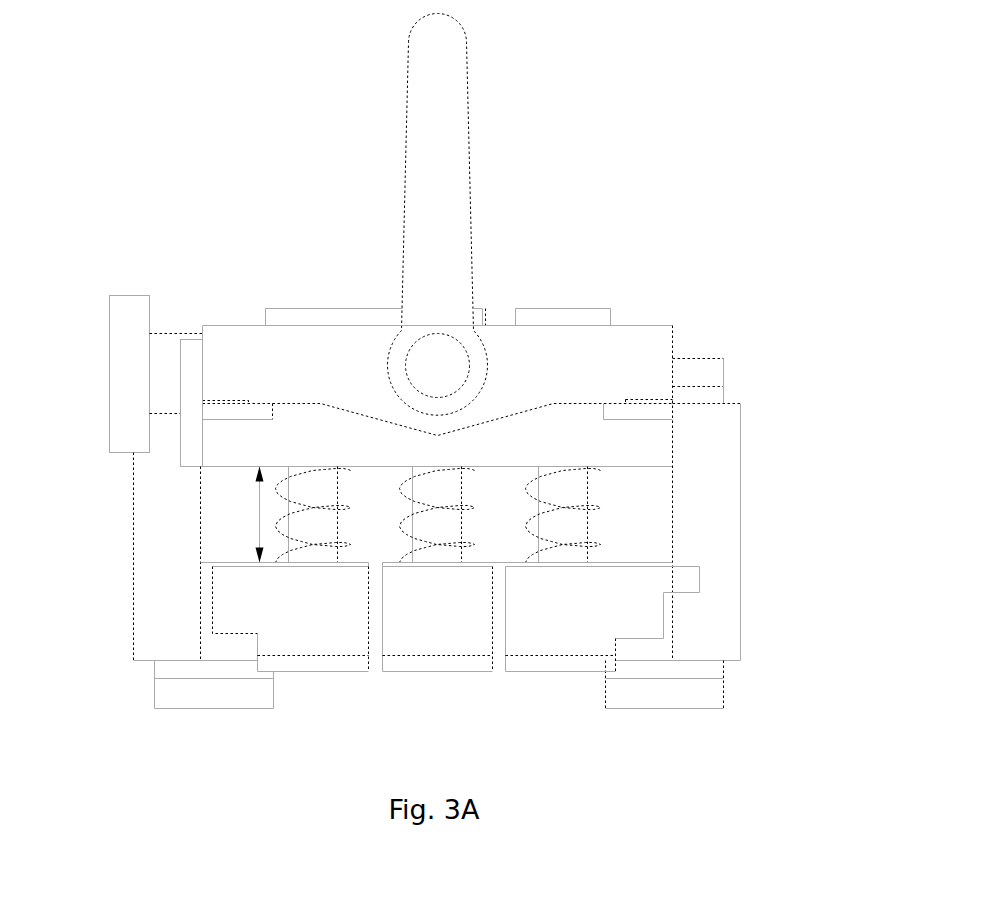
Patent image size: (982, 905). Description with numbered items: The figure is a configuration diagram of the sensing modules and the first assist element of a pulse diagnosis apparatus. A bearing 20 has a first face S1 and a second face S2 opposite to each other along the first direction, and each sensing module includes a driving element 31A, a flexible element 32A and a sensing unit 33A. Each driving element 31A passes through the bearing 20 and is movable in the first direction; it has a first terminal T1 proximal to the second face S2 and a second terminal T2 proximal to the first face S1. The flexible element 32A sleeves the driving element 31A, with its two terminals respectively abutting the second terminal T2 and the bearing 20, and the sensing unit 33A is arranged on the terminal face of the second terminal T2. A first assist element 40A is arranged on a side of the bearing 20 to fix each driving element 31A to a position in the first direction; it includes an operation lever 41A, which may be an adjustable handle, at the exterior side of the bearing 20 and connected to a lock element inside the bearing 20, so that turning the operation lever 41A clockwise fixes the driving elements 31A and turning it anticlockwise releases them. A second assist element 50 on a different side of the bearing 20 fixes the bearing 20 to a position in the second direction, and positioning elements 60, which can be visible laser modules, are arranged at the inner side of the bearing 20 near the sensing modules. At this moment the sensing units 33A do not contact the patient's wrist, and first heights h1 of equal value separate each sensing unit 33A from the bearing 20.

The operation lever 41A is at (457, 168).
The first assist element 40A is at (454, 215).
The first terminal T1 is at (553, 325).
The second face S2 is at (637, 325).
The second assist element 50 is at (123, 368).
The bearing 20 is at (728, 427).
The first face S1 is at (225, 485).
The first height h1 is at (241, 515).
The driving element 31A is at (578, 500).
The flexible element 32A is at (590, 547).
The positioning element 60 is at (213, 650).
The sensing unit 33A is at (445, 671).
The second terminal T2 is at (560, 646).